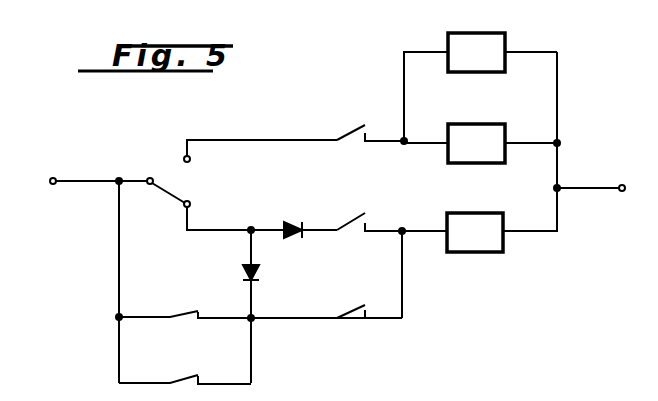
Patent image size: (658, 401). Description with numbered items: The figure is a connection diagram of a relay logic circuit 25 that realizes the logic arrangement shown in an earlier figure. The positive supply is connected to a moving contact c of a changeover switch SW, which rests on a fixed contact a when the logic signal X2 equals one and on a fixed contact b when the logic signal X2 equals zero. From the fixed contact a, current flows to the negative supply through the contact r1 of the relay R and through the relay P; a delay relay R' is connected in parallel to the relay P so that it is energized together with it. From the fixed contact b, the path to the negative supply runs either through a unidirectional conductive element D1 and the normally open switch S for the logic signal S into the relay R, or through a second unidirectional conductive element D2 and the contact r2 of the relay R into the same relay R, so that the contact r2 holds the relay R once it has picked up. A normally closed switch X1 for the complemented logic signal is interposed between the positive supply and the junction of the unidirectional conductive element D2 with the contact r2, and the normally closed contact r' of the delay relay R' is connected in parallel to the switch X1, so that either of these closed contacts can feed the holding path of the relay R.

The control circuit 25 is at (265, 116).
The changeover switch SW is at (160, 174).
The fixed contact a is at (193, 160).
The fixed contact b is at (194, 208).
The moving contact c is at (145, 191).
The logic signal X2 is at (179, 205).
The normally closed switch X1 is at (190, 290).
The contact of relay R r1 is at (368, 126).
The contact of relay R r2 is at (349, 304).
The normally closed contact of delay relay R' r' is at (185, 367).
The normally open switch S is at (369, 216).
The unidirectional conductive element D1 is at (296, 219).
The unidirectional conductive element D2 is at (257, 278).
The relay R is at (475, 232).
The delay relay R' is at (476, 52).
The relay P is at (476, 143).